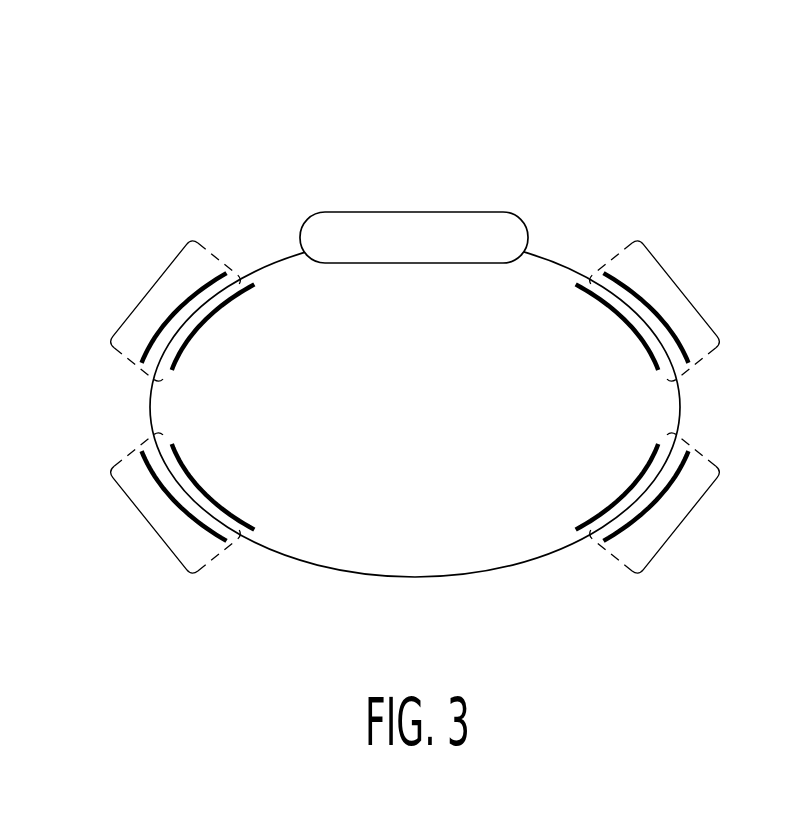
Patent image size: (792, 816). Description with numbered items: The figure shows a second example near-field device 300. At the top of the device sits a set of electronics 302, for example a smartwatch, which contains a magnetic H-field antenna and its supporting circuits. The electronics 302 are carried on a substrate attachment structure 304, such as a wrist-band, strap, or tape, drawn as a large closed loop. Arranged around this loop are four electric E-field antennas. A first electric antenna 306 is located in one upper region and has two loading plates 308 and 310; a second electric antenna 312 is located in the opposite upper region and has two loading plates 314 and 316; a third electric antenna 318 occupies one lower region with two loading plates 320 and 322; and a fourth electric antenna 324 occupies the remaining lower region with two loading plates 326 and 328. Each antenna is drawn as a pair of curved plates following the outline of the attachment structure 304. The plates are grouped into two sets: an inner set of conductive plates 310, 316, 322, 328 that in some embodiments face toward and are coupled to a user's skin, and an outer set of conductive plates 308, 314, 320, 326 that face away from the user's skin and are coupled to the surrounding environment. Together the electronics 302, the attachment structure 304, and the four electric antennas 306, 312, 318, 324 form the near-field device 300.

The near-field device 300 is at (130, 90).
The set of electronics 302 is at (450, 212).
The substrate attachment structure 304 is at (680, 412).
The first electric antenna 306 is at (160, 276).
The loading plate 308 is at (190, 299).
The loading plate 310 is at (199, 330).
The second electric antenna 312 is at (679, 289).
The loading plate 314 is at (640, 296).
The loading plate 316 is at (640, 337).
The third electric antenna 318 is at (678, 527).
The loading plate 320 is at (636, 522).
The loading plate 322 is at (630, 488).
The fourth electric antenna 324 is at (152, 527).
The loading plate 326 is at (193, 522).
The loading plate 328 is at (197, 481).